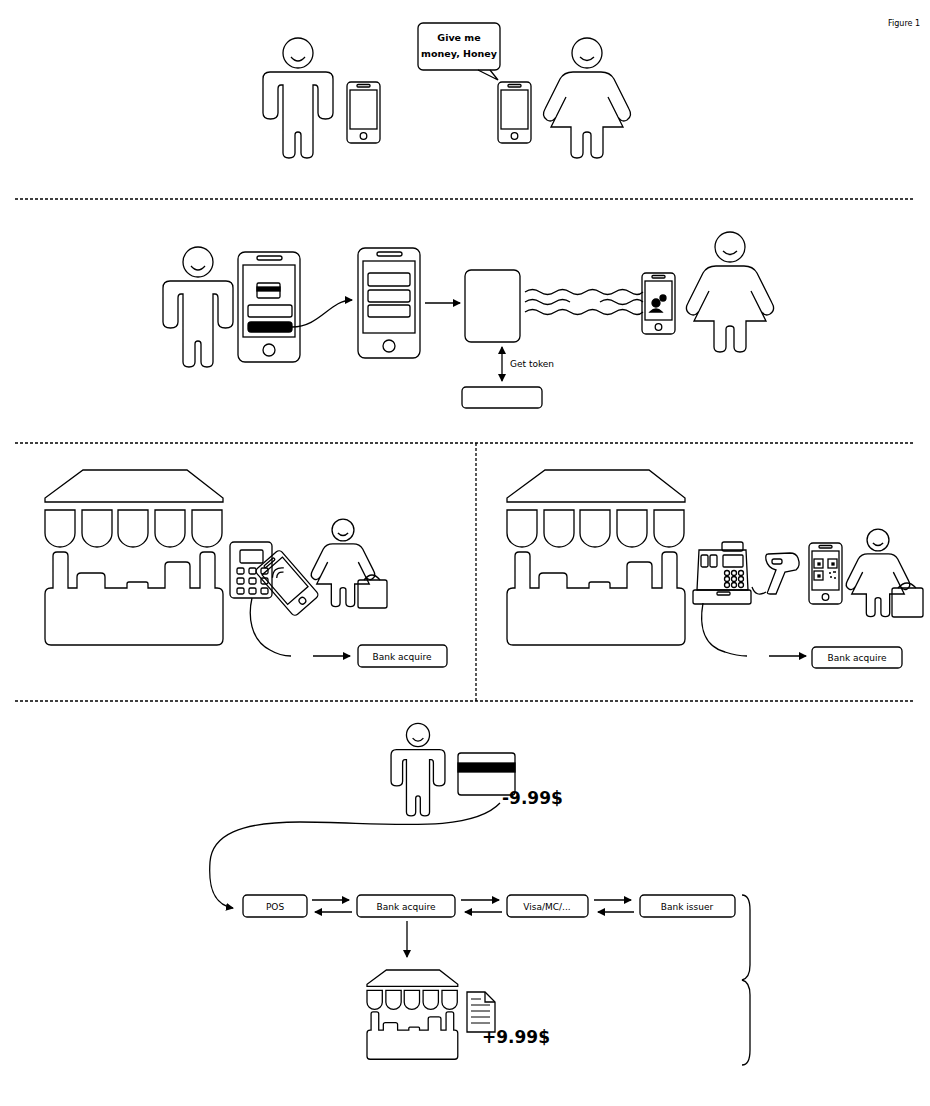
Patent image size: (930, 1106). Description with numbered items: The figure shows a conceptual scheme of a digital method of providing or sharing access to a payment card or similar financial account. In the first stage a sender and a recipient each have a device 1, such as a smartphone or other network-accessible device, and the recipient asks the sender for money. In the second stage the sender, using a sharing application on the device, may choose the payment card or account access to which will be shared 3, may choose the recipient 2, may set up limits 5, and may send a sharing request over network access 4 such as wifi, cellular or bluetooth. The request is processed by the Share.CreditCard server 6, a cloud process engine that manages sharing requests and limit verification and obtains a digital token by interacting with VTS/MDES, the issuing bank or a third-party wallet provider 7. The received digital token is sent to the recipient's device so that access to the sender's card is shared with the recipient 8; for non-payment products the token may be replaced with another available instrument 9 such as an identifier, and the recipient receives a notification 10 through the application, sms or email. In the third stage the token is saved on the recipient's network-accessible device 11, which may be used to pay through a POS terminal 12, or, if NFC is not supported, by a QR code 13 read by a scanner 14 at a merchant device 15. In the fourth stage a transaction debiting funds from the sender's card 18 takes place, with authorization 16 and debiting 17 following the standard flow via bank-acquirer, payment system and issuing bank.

The sender's and/or recipient's device 1 is at (373, 118).
The recipient 2 is at (293, 311).
The payment card to be shared 3 is at (281, 296).
The network access 4 is at (292, 268).
The limits 5 is at (372, 268).
The Share.CreditCard server 6 is at (470, 333).
The third-party wallet provider 7 is at (540, 390).
The sharing of access with the recipient 8 is at (550, 290).
The other available instrument 9 is at (573, 313).
The notification 10 is at (648, 318).
The recipient's network-accessible device 11 is at (290, 560).
The POS terminal transaction 12 is at (238, 542).
The QR code 13 is at (817, 557).
The transaction via QR code scanner 14 is at (796, 557).
The merchant transaction device 15 is at (728, 542).
The authorization flow 16 is at (270, 652).
The debiting funds flow 17 is at (755, 980).
The debiting transaction 18 is at (495, 758).